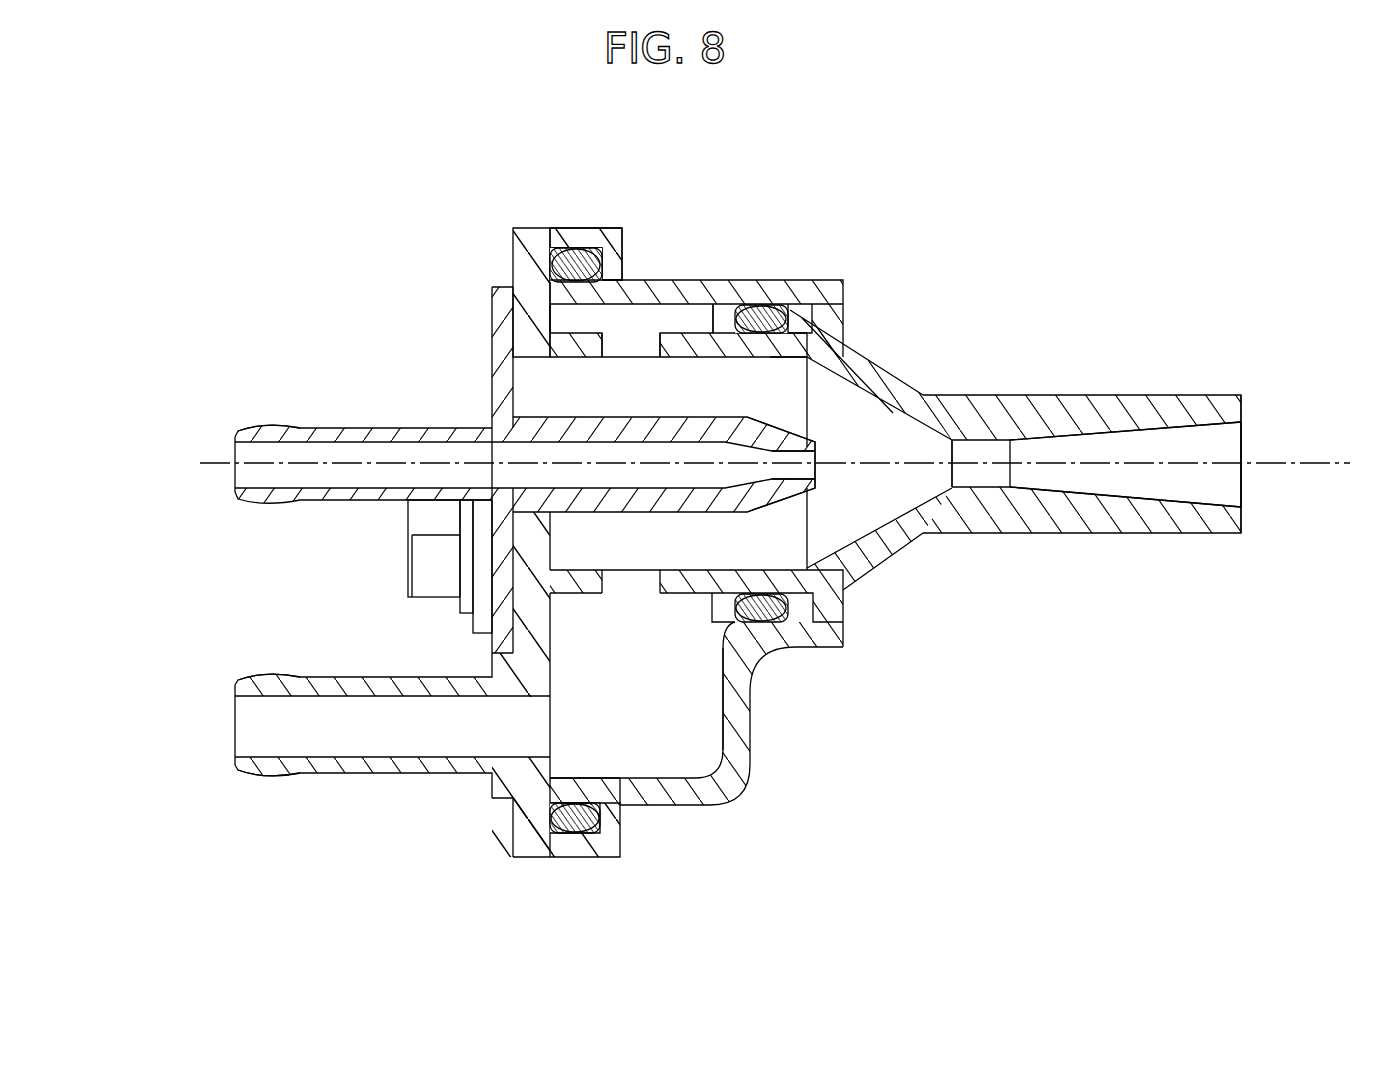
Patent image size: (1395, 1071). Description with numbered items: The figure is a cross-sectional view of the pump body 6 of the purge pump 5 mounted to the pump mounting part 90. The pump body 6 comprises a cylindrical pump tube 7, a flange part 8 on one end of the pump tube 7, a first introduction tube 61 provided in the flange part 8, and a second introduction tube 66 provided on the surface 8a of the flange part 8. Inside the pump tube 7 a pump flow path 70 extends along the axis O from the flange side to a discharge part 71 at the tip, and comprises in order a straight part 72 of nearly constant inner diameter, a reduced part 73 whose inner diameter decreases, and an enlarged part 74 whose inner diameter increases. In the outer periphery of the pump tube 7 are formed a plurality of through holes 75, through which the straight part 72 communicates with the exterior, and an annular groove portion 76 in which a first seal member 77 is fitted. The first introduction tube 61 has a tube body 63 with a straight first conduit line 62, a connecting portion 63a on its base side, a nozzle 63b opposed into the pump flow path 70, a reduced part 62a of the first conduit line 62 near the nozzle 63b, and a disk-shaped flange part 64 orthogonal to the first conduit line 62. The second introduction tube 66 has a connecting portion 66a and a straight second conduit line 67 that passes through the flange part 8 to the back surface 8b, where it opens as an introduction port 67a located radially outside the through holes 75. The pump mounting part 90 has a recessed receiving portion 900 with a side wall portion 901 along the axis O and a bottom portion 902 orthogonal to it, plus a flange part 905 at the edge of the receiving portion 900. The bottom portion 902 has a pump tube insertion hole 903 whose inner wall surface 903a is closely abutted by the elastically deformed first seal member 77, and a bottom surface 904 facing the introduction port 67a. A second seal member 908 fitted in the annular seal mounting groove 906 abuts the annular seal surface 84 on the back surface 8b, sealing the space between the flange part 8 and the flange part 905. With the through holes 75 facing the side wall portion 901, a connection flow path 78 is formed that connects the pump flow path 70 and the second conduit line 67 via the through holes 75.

The purge pump 5 is at (1189, 157).
The pump body 6 is at (1147, 406).
The pump tube 7 is at (990, 397).
The flange part 8 is at (563, 218).
The surface 8a is at (512, 282).
The back surface 8b is at (592, 252).
The first introduction tube 61 is at (549, 456).
The first conduit line 62 is at (270, 452).
The reduced part 62a is at (750, 474).
The tube body 63 is at (398, 428).
The connecting portion 63a is at (275, 425).
The nozzle 63b is at (815, 468).
The flange part 64 is at (505, 540).
The second introduction tube 66 is at (392, 788).
The connecting portion 66a is at (270, 778).
The second conduit line 67 is at (270, 720).
The introduction port 67a is at (552, 722).
The pump flow path 70 is at (947, 487).
The discharge part 71 is at (1242, 495).
The straight part 72 is at (524, 383).
The reduced part 73 is at (893, 427).
The enlarged part 74 is at (1157, 450).
The through holes 75 is at (615, 350).
The groove portion 76 is at (735, 318).
The first seal member 77 is at (777, 308).
The connection flow path 78 is at (604, 692).
The annular seal surface 84 is at (580, 732).
The pump mounting part 90 is at (596, 341).
The receiving portion 900 is at (727, 283).
The side wall portion 901 is at (670, 793).
The bottom portion 902 is at (690, 647).
The pump tube insertion hole 903 is at (663, 761).
The inner wall surface 903a is at (813, 325).
The bottom surface 904 is at (728, 797).
The flange part 905 is at (575, 255).
The seal mounting groove 906 is at (570, 833).
The second seal member 908 is at (603, 837).
The axis O is at (1320, 440).